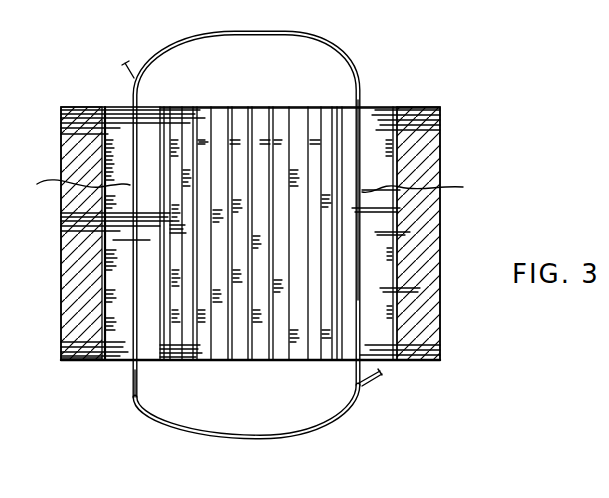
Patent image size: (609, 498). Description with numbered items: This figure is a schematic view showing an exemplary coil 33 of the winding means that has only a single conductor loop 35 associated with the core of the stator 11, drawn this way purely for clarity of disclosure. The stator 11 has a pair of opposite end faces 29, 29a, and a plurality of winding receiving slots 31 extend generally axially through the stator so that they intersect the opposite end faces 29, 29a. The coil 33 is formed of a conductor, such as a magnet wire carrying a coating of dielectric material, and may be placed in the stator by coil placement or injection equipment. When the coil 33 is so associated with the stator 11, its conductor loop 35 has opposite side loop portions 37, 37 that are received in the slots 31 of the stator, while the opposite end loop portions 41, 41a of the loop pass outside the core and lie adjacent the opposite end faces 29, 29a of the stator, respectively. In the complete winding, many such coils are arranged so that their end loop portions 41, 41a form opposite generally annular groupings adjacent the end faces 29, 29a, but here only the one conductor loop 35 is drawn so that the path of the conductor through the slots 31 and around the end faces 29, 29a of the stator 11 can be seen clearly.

The stator 11 is at (53, 256).
The end face 29 is at (73, 107).
The opposite end face 29a is at (73, 362).
The winding receiving slot 31 is at (113, 133).
The coil 33 is at (352, 55).
The conductor loop 35 is at (134, 400).
The side loop portion 37 is at (251, 188).
The end loop portion 41 is at (280, 33).
The opposite end loop portion 41a is at (304, 434).